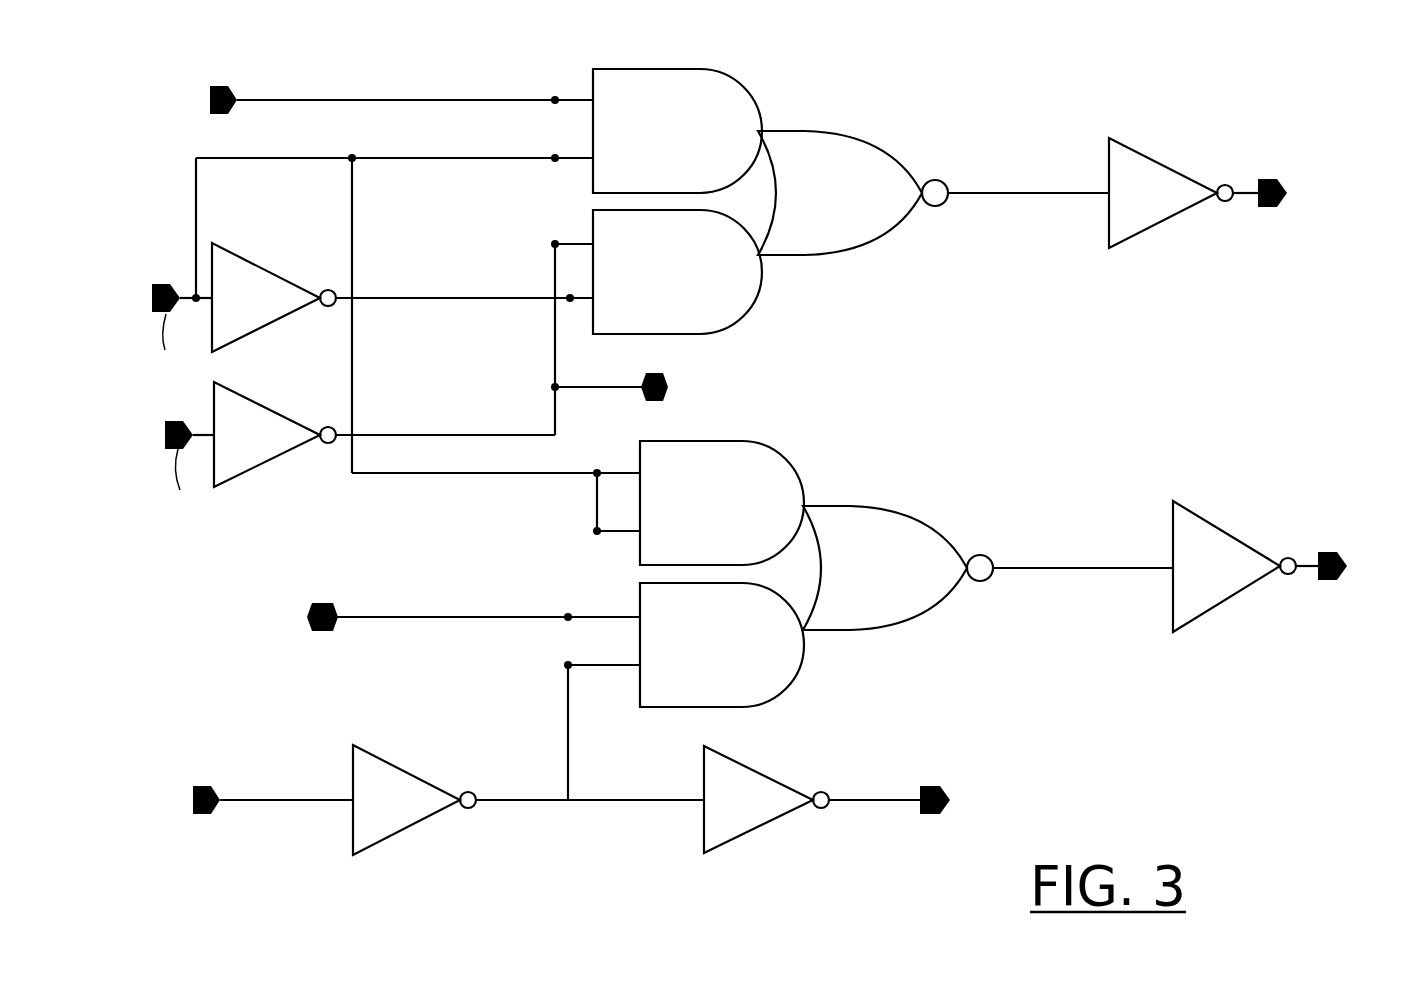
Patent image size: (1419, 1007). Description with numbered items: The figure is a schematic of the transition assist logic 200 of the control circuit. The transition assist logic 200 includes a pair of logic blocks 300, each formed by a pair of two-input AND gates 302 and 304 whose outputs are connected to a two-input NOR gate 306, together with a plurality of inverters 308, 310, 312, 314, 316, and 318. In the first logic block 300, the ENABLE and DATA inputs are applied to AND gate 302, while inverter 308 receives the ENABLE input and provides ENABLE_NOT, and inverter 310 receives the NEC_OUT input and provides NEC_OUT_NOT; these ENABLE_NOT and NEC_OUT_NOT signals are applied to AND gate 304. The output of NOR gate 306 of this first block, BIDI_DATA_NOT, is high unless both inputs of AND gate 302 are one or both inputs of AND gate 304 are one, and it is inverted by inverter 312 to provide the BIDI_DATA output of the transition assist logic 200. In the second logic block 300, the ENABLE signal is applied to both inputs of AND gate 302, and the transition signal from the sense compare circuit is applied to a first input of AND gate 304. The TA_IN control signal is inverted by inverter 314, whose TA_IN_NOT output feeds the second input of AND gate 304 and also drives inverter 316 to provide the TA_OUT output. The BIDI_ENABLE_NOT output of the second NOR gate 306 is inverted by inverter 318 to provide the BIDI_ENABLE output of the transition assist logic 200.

The transition assist logic 200 is at (1173, 395).
The logic block 300 is at (806, 105).
The AND gate 302 is at (698, 317).
The AND gate 304 is at (698, 458).
The NOR gate 306 is at (875, 380).
The inverter 308 is at (274, 297).
The inverter 310 is at (275, 434).
The inverter 312 is at (1171, 193).
The inverter 314 is at (414, 800).
The inverter 316 is at (766, 799).
The inverter 318 is at (1234, 566).